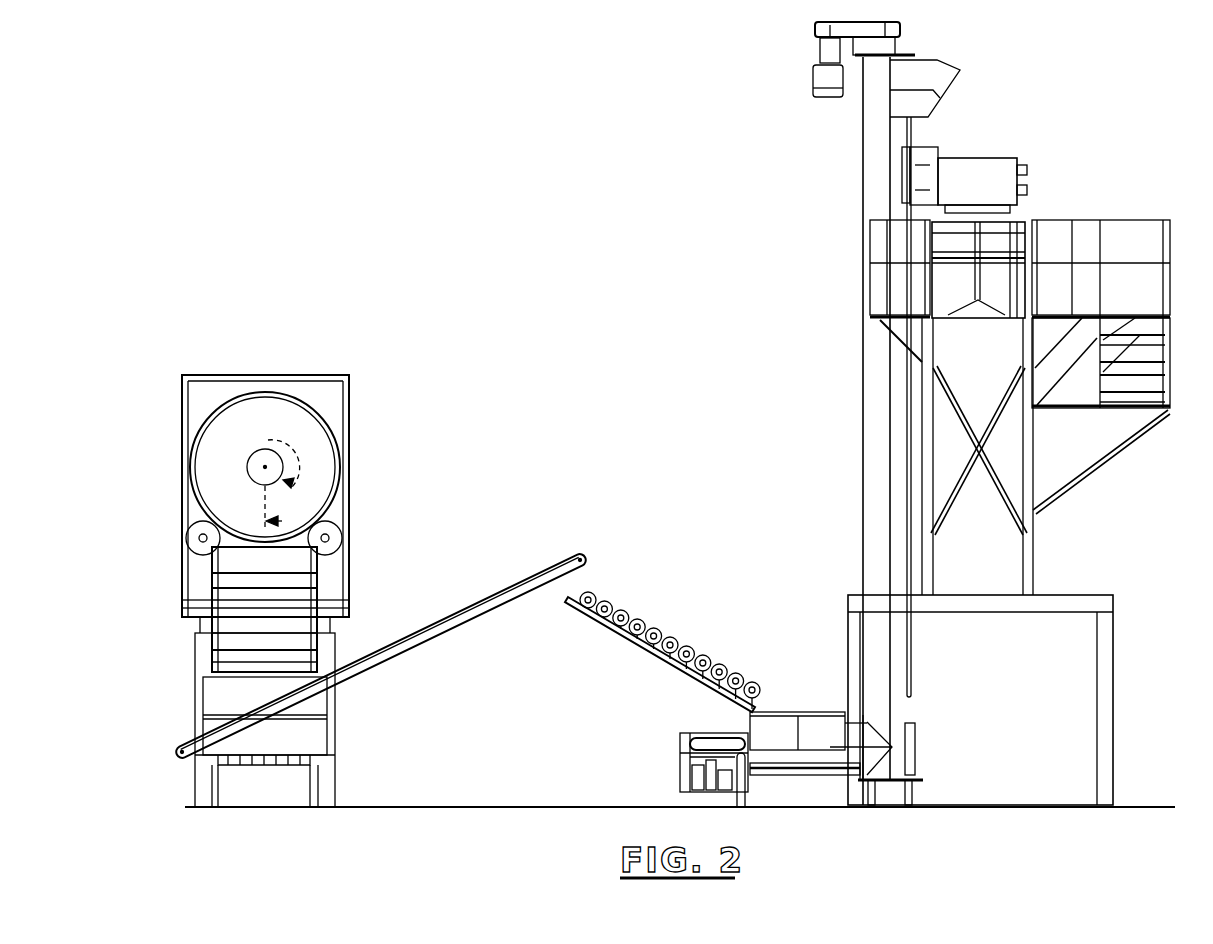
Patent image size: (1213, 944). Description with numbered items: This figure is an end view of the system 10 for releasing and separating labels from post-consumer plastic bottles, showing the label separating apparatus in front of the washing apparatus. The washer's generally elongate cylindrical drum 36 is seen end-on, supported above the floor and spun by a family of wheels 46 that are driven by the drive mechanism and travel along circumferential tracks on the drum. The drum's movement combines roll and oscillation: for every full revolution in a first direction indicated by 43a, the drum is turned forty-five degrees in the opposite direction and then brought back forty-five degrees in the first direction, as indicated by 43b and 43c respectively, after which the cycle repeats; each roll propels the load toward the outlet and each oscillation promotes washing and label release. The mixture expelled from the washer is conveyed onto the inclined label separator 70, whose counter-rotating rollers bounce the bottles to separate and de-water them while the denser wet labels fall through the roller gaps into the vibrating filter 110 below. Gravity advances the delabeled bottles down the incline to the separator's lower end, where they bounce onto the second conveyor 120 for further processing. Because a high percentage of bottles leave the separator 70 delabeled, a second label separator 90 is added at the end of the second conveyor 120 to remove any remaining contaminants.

The system 10 is at (332, 340).
The drum 36 is at (346, 410).
The first direction 43a is at (258, 450).
The oscillation in the second direction 43b is at (284, 498).
The return oscillation in the first direction 43c is at (283, 520).
The wheels 46 is at (186, 541).
The label separating and removing apparatus 70 is at (316, 585).
The second label separator 90 is at (720, 640).
The vibrating filter 110 is at (313, 733).
The second conveyor 120 is at (392, 672).